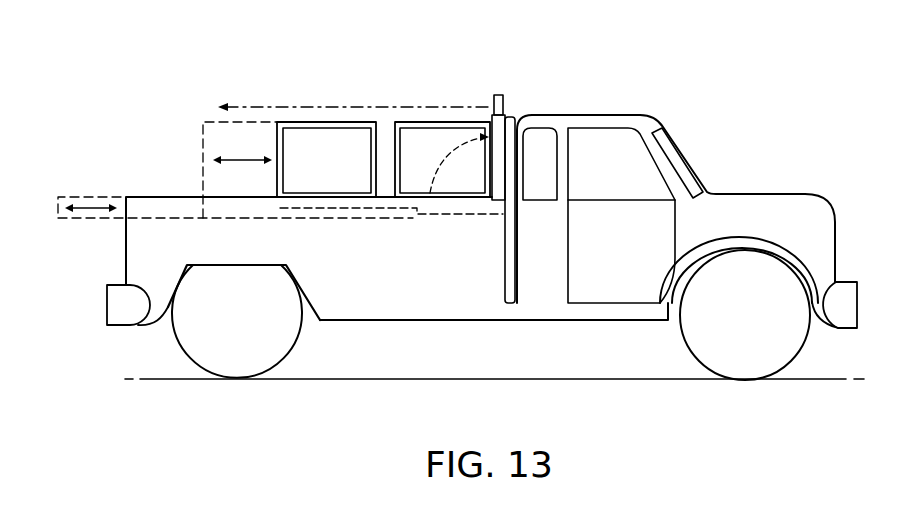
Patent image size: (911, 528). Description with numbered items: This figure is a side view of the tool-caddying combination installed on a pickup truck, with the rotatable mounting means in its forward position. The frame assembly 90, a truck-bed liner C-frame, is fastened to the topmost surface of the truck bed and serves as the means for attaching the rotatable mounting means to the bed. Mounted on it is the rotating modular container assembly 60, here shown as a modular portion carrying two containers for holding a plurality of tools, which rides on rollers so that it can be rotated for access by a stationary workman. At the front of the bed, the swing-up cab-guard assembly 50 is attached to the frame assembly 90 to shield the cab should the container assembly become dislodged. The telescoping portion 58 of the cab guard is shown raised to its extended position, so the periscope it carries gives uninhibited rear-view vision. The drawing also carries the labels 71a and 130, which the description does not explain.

The swing-up cab-guard assembly 50 is at (522, 106).
The telescoping portion 58 is at (500, 96).
The rotating modular container assembly 60 is at (422, 122).
The extended position 71a is at (92, 196).
The frame assembly 90 is at (358, 213).
The truck bed 130 is at (138, 252).